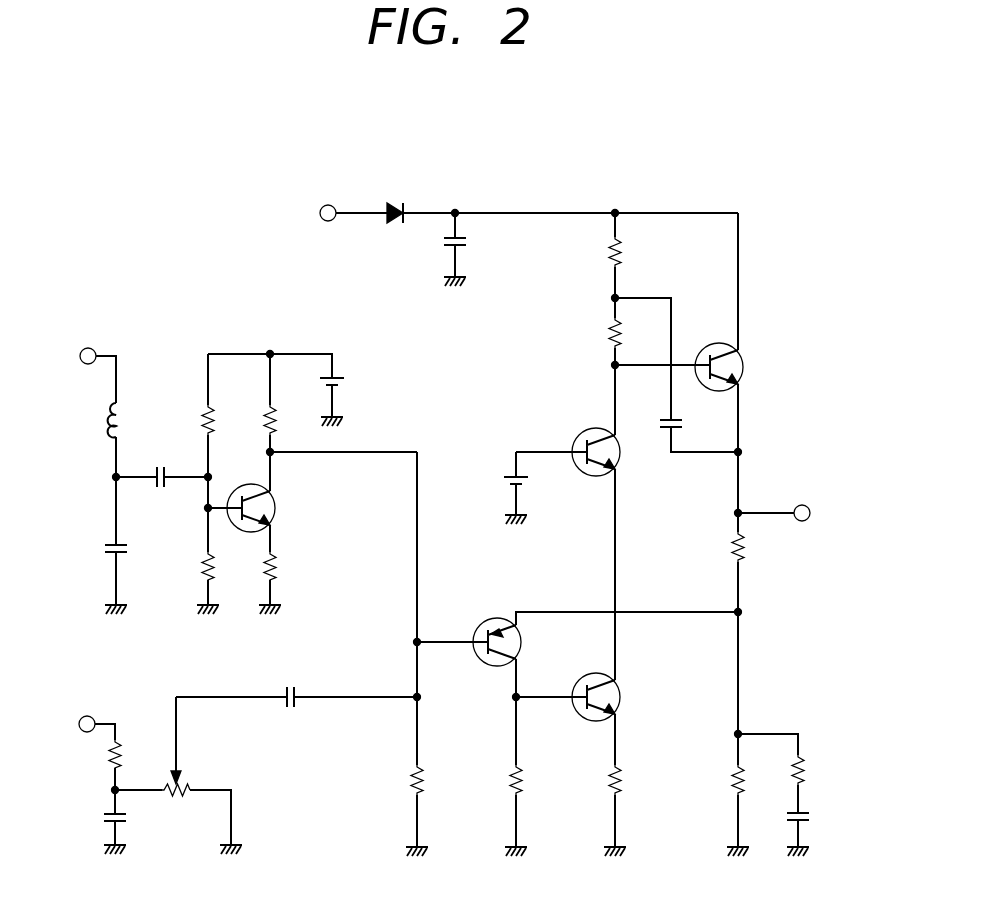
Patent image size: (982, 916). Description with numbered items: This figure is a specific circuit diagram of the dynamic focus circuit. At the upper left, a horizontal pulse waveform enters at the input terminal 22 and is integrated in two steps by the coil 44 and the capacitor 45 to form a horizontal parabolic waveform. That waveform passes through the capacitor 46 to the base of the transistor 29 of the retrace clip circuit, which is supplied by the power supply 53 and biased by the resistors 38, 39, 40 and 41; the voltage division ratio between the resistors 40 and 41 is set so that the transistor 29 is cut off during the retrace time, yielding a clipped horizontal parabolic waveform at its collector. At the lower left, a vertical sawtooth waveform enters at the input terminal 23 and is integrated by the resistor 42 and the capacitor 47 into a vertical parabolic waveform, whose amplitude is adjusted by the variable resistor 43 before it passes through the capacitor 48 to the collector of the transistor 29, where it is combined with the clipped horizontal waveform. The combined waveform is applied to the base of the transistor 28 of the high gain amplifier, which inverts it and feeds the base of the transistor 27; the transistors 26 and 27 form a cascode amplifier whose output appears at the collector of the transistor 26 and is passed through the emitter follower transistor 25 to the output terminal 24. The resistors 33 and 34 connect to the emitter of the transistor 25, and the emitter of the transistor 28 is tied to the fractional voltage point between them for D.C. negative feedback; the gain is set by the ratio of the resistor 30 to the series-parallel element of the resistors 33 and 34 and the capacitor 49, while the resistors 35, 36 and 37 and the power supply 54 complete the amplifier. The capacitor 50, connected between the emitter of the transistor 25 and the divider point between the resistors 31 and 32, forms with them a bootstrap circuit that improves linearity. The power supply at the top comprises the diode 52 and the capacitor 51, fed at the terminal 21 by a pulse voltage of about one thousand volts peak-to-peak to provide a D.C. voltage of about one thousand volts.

The terminal 21 is at (320, 213).
The input terminal 22 is at (89, 347).
The input terminal 23 is at (88, 715).
The terminal 24 is at (803, 505).
The transistor 25 is at (742, 383).
The transistor 26 is at (616, 470).
The transistor 27 is at (622, 700).
The transistor 28 is at (487, 665).
The transistor 29 is at (276, 500).
The resistor 30 is at (746, 546).
The resistor 31 is at (608, 247).
The resistor 32 is at (608, 330).
The resistor 33 is at (808, 765).
The resistor 34 is at (730, 775).
The resistor 35 is at (625, 785).
The resistor 36 is at (525, 785).
The resistor 37 is at (425, 785).
The resistor 38 is at (262, 418).
The resistor 39 is at (278, 565).
The resistor 40 is at (200, 418).
The resistor 41 is at (200, 568).
The resistor 42 is at (108, 757).
The variable resistor 43 is at (176, 798).
The coil 44 is at (108, 420).
The capacitor 45 is at (107, 545).
The capacitor 46 is at (156, 490).
The capacitor 47 is at (104, 815).
The capacitor 48 is at (295, 703).
The capacitor 49 is at (808, 815).
The capacitor 50 is at (667, 418).
The capacitor 51 is at (464, 247).
The diode 52 is at (398, 226).
The power supply 53 is at (345, 378).
The power supply 54 is at (512, 470).